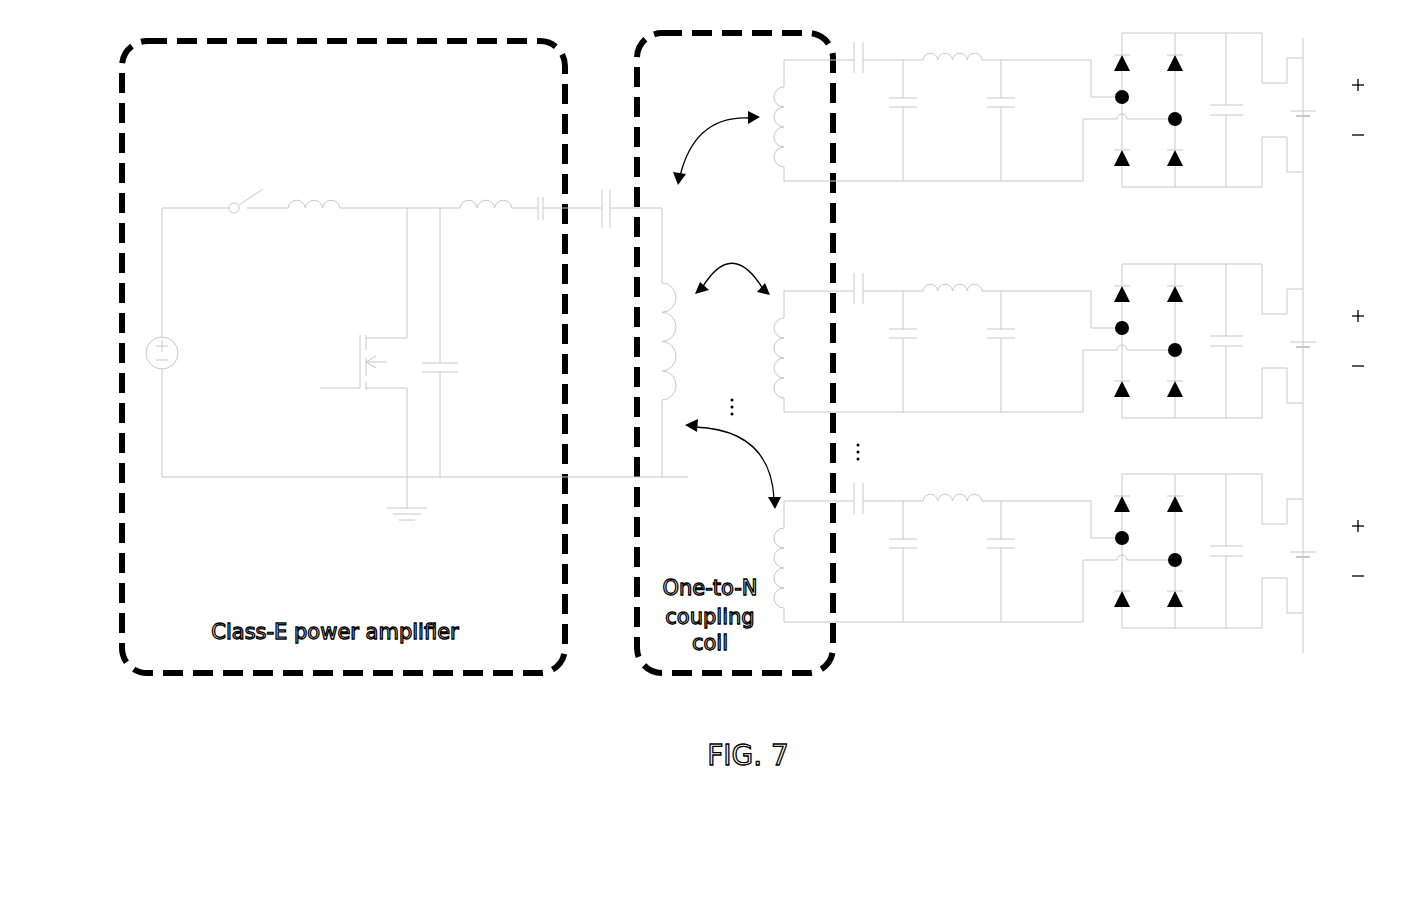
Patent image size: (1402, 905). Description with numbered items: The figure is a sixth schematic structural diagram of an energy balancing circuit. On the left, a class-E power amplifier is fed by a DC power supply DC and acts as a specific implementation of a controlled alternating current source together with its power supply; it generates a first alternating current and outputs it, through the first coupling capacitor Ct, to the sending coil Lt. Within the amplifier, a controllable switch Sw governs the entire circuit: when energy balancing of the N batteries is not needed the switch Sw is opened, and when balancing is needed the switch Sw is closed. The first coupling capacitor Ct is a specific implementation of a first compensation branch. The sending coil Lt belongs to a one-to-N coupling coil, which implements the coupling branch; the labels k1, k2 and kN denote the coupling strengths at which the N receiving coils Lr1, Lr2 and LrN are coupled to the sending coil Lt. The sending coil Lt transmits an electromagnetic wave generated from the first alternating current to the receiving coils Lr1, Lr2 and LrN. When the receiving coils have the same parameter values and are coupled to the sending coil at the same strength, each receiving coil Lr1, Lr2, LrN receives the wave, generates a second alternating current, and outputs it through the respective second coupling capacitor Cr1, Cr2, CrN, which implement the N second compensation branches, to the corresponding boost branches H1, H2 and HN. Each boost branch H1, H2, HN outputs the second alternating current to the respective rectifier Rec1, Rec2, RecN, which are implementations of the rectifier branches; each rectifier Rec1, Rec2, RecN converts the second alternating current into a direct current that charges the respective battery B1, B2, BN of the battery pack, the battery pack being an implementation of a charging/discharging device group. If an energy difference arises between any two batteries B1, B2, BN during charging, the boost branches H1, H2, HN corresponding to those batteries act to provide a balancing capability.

The controllable switch Sw is at (217, 165).
The DC power supply DC is at (224, 363).
The first coupling capacitor Ct is at (594, 228).
The sending coil Lt is at (658, 380).
The coupling strength k1 is at (713, 138).
The coupling strength k2 is at (732, 262).
The coupling strength kN is at (733, 464).
The receiving coil Lr1 is at (799, 120).
The receiving coil Lr2 is at (799, 351).
The receiving coil LrN is at (801, 561).
The second coupling capacitor Cr1 is at (847, 75).
The second coupling capacitor Cr2 is at (847, 306).
The second coupling capacitor CrN is at (862, 516).
The boost branch H1 is at (976, 138).
The boost branch H2 is at (976, 369).
The boost branch HN is at (976, 582).
The rectifier Rec1 is at (1208, 134).
The rectifier Rec2 is at (1208, 365).
The rectifier RecN is at (1208, 575).
The battery B1 is at (1327, 107).
The battery B2 is at (1327, 338).
The battery BN is at (1327, 548).